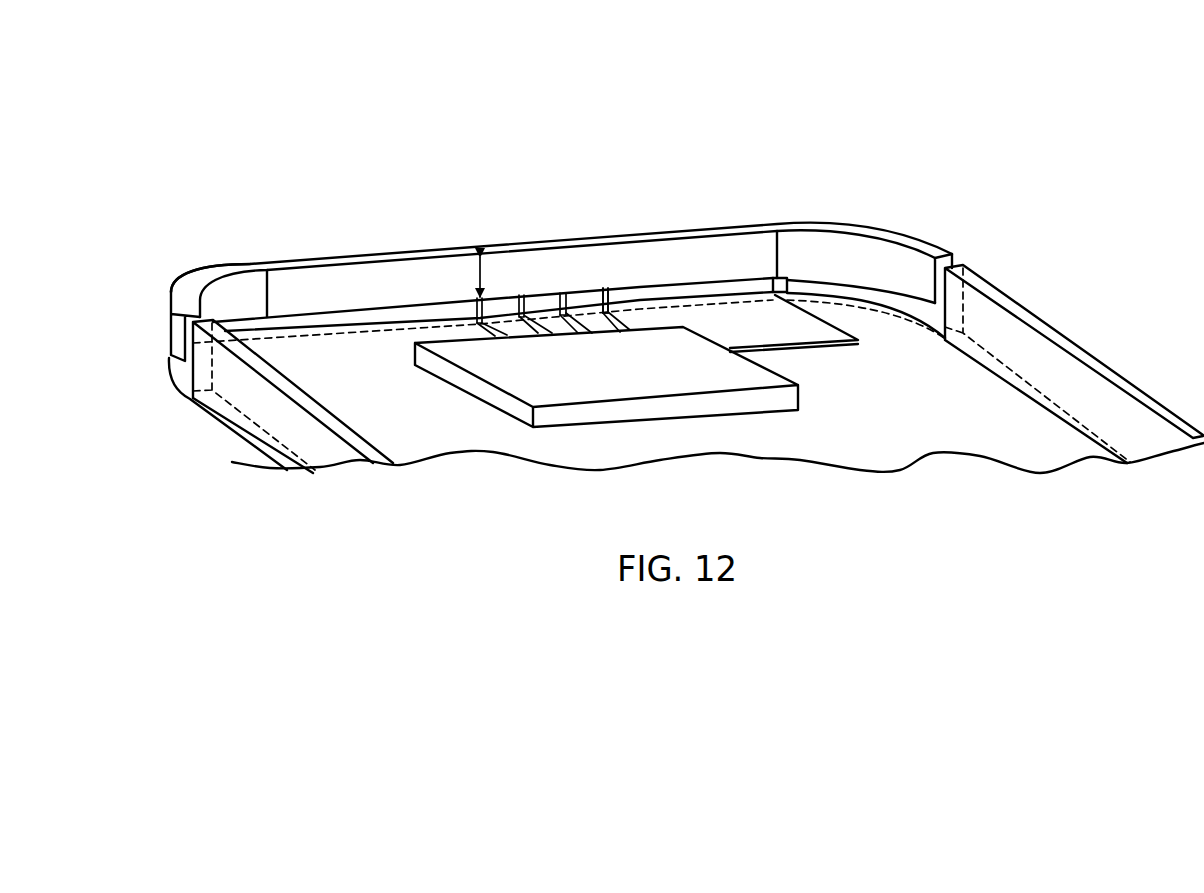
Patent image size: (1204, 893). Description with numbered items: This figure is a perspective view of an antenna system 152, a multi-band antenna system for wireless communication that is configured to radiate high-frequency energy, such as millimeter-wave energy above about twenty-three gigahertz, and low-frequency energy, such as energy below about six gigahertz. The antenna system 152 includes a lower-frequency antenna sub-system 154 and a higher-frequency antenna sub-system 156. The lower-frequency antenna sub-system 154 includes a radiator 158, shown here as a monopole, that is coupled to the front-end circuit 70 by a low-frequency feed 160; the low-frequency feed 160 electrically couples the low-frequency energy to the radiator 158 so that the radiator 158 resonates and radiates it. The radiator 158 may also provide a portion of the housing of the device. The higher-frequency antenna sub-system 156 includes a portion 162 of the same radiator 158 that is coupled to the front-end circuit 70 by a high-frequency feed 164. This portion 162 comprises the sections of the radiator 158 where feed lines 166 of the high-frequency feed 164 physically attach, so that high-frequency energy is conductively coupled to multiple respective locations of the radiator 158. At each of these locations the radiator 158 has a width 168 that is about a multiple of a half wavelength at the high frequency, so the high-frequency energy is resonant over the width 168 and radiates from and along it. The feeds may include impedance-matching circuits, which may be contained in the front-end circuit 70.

The antenna system 152 is at (827, 70).
The lower-frequency antenna sub-system 154 is at (890, 193).
The higher-frequency antenna sub-system 156 is at (420, 170).
The radiator 158 is at (286, 265).
The low-frequency feed 160 is at (830, 341).
The portion of the radiator 162 is at (596, 258).
The high-frequency feed 164 is at (598, 280).
The feed lines 166 is at (473, 323).
The width 168 is at (473, 279).
The front-end circuit 70 is at (657, 423).